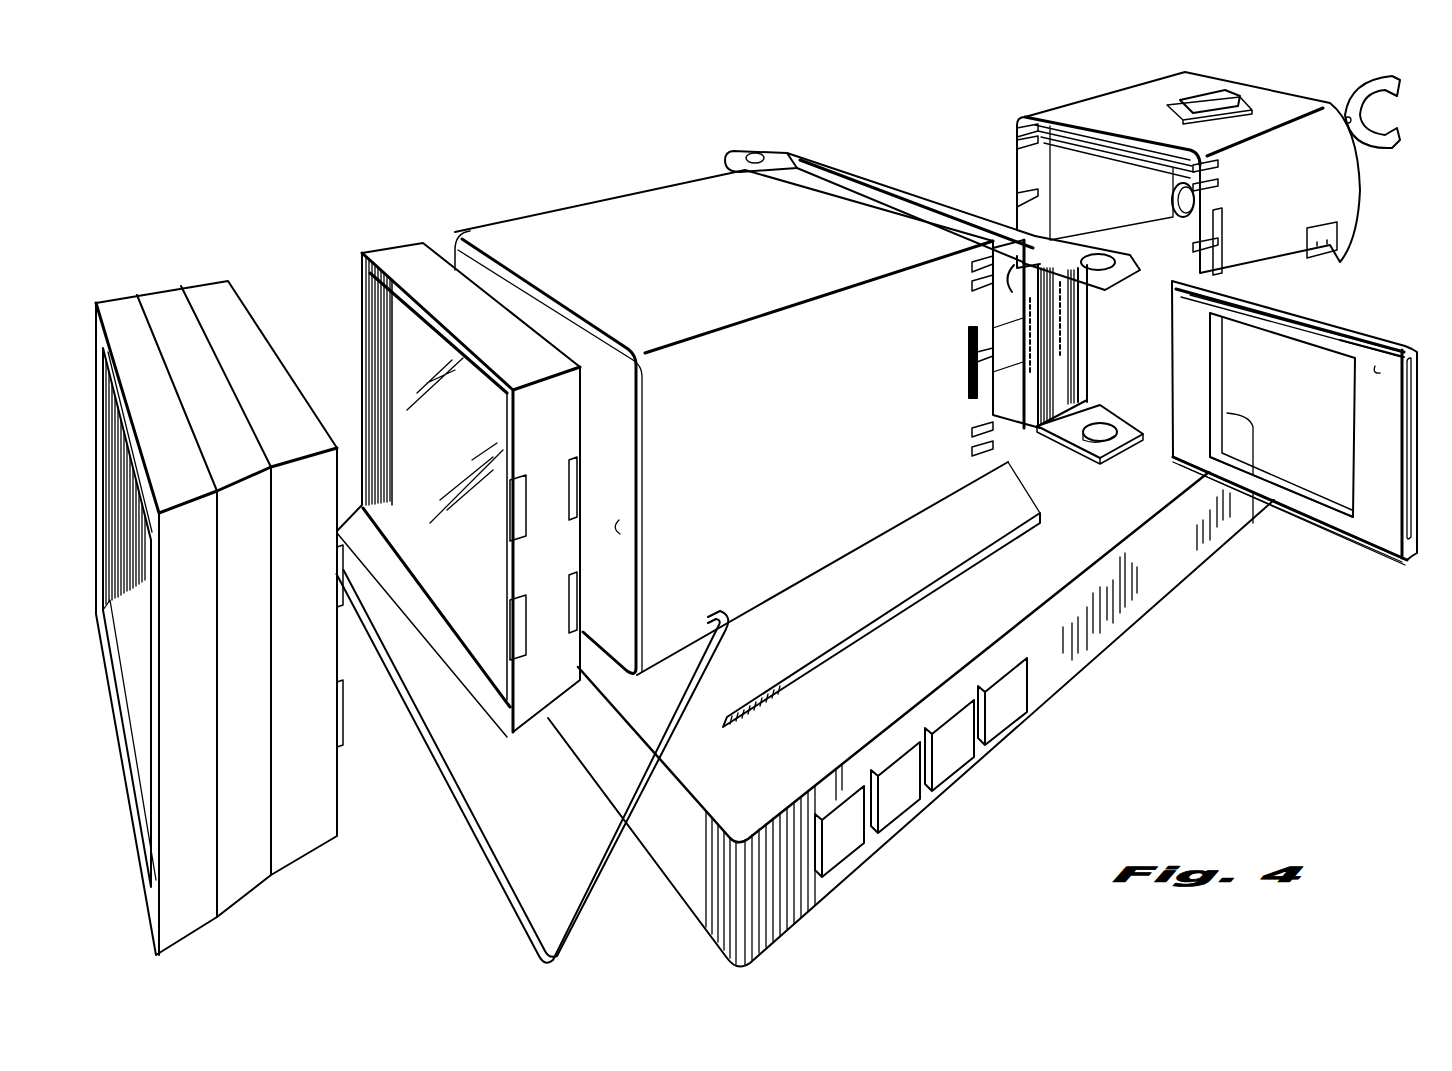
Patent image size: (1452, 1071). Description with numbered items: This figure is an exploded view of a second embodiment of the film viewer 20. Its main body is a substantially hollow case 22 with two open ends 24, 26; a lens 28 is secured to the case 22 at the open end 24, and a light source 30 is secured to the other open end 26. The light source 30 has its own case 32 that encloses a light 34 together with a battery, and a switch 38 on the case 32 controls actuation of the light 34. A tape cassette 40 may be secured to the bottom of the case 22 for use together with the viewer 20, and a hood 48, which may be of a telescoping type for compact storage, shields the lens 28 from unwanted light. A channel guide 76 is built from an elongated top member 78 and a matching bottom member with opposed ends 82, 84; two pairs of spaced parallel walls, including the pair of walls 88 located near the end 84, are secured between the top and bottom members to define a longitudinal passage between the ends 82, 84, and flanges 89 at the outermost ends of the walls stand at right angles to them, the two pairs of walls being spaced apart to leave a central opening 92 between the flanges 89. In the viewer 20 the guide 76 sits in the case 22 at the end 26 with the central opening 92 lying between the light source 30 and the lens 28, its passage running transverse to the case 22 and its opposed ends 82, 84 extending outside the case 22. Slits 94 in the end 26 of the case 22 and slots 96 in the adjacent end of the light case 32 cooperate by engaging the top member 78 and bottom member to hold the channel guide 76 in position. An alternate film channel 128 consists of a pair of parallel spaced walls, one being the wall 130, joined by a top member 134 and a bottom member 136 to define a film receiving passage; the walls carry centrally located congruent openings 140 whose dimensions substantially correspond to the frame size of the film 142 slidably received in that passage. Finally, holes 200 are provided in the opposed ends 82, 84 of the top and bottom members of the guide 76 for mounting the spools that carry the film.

The film viewer 20 is at (629, 159).
The case 22 is at (580, 205).
The open end 24 is at (640, 531).
The open end 26 is at (977, 352).
The lens 28 is at (553, 718).
The light source 30 is at (1290, 82).
The case 32 is at (1108, 110).
The light 34 is at (1172, 193).
The switch 38 is at (1205, 100).
The tape cassette 40 is at (1030, 718).
The hood 48 is at (152, 292).
The channel guide 76 is at (809, 145).
The top member 78 is at (803, 158).
The opposed end 82 is at (738, 150).
The opposed end 84 is at (1100, 464).
The pair of walls 88 is at (1045, 412).
The flanges 89 is at (1075, 378).
The central opening 92 is at (1004, 296).
The slits 94 is at (996, 459).
The slots 96 is at (1218, 188).
The film channel 128 is at (1396, 318).
The wall 130 is at (1408, 349).
The top member 134 is at (1288, 303).
The bottom member 136 is at (1330, 530).
The openings 140 is at (1312, 460).
The film 142 is at (1353, 328).
The holes 200 is at (1117, 439).